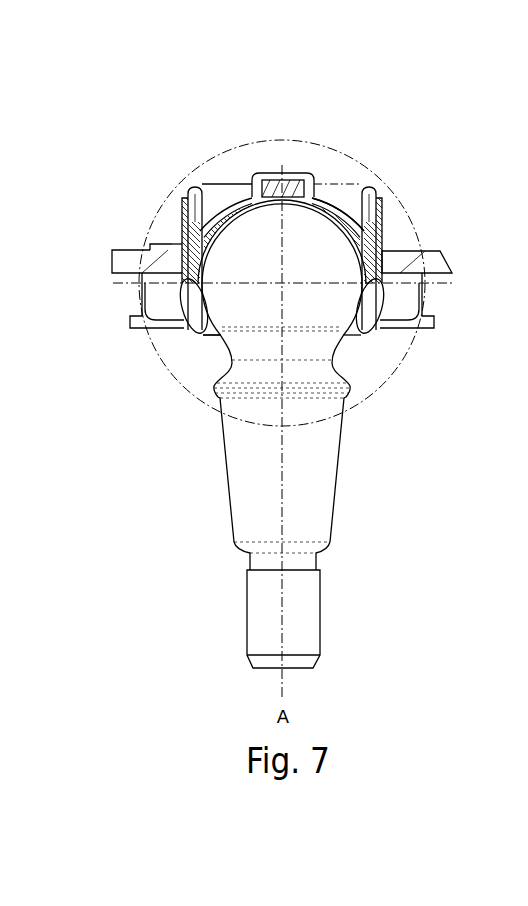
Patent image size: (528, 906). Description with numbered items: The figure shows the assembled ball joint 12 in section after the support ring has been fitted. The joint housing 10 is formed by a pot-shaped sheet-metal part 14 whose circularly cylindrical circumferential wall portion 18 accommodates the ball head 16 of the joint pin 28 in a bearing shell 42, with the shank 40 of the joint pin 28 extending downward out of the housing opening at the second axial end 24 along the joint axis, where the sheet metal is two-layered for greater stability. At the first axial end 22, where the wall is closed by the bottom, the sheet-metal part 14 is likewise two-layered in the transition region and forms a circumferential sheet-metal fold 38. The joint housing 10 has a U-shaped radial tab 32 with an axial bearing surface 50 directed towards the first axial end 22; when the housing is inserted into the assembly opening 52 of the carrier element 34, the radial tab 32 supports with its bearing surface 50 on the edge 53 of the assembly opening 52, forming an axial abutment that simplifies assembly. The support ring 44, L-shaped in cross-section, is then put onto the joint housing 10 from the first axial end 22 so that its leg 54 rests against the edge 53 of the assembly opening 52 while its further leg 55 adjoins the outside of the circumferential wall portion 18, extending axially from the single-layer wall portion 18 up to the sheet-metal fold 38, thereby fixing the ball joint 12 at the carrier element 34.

The joint housing 10 is at (338, 187).
The sheet-metal part 14 is at (338, 214).
The ball joint 12 is at (167, 483).
The ball head 16 is at (294, 269).
The circumferential wall portion 18 is at (187, 263).
The first axial end 22 is at (300, 163).
The second axial end 24 is at (214, 343).
The joint pin 28 is at (365, 430).
The radial tab 32 is at (428, 295).
The carrier element 34 is at (127, 263).
The circumferential sheet-metal fold 38 is at (203, 200).
The shank 40 is at (294, 525).
The bearing shell 42 is at (207, 245).
The support ring 44 is at (175, 232).
The axial bearing surface 50 is at (407, 273).
The assembly opening 52 is at (377, 238).
The edge of the assembly opening 53 is at (395, 263).
The leg 54 is at (166, 246).
The further leg 55 is at (182, 218).